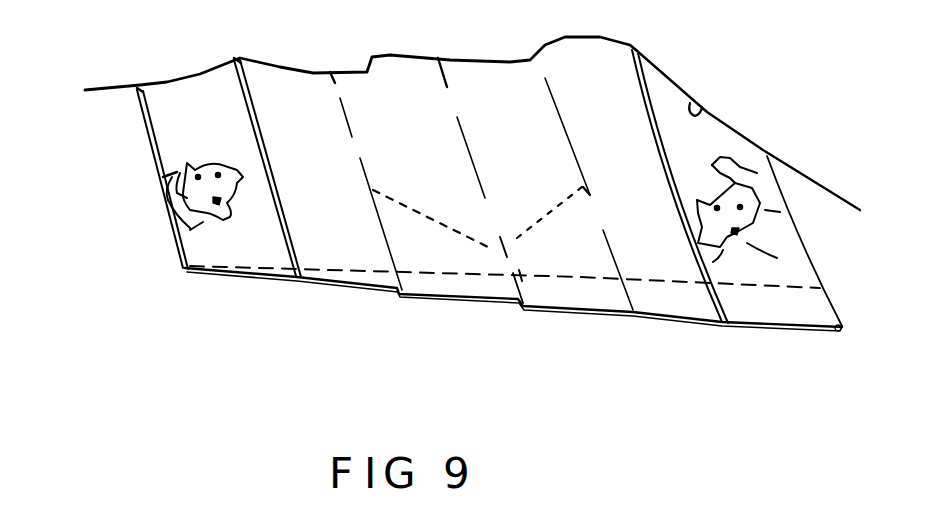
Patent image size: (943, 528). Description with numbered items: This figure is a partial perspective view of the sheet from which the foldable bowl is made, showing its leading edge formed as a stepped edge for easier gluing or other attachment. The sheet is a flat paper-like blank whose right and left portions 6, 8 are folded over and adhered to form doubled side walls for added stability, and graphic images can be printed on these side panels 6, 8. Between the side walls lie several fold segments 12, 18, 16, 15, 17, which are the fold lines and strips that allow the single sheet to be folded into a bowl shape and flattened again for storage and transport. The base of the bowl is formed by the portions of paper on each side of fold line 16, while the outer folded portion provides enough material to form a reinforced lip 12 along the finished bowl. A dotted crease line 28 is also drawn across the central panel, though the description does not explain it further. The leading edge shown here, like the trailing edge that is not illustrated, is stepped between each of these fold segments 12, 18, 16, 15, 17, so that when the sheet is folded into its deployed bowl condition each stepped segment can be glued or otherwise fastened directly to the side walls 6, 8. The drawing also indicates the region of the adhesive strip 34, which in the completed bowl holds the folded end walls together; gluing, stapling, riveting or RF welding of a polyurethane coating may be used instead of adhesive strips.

The left side wall portion 6 is at (163, 97).
The right side wall portion 8 is at (797, 250).
The reinforced lip fold segment 12 is at (730, 327).
The fold segment 15 is at (395, 293).
The base fold line 16 is at (520, 310).
The fold segment 17 is at (297, 292).
The fold line 18 is at (640, 325).
The dotted fold line 28 is at (565, 282).
The adhesive strip 34 is at (437, 280).